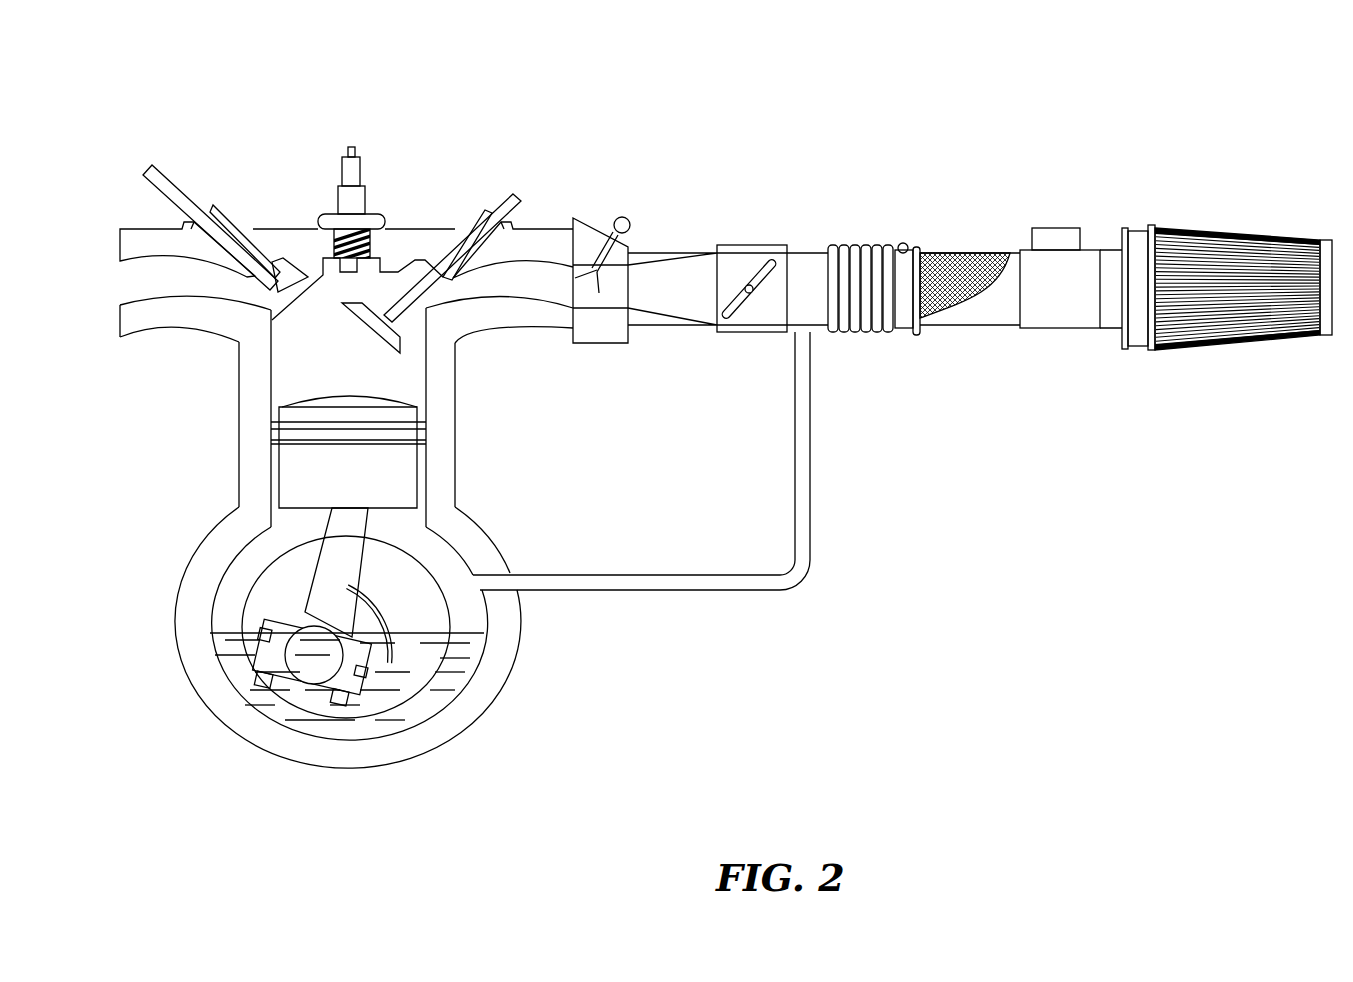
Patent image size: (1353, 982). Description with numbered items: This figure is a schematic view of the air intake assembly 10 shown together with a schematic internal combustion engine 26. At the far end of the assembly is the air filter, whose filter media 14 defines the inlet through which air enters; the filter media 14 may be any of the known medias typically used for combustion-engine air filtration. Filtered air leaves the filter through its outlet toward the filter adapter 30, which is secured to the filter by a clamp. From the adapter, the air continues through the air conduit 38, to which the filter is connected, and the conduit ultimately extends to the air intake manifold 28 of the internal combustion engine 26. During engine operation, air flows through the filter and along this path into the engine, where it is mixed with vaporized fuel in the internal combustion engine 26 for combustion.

The air intake assembly 10 is at (798, 95).
The internal combustion engine 26 is at (140, 127).
The air intake manifold 28 is at (704, 233).
The air conduit 38 is at (966, 226).
The filter adapter 30 is at (1134, 208).
The filter media 14 is at (1277, 210).